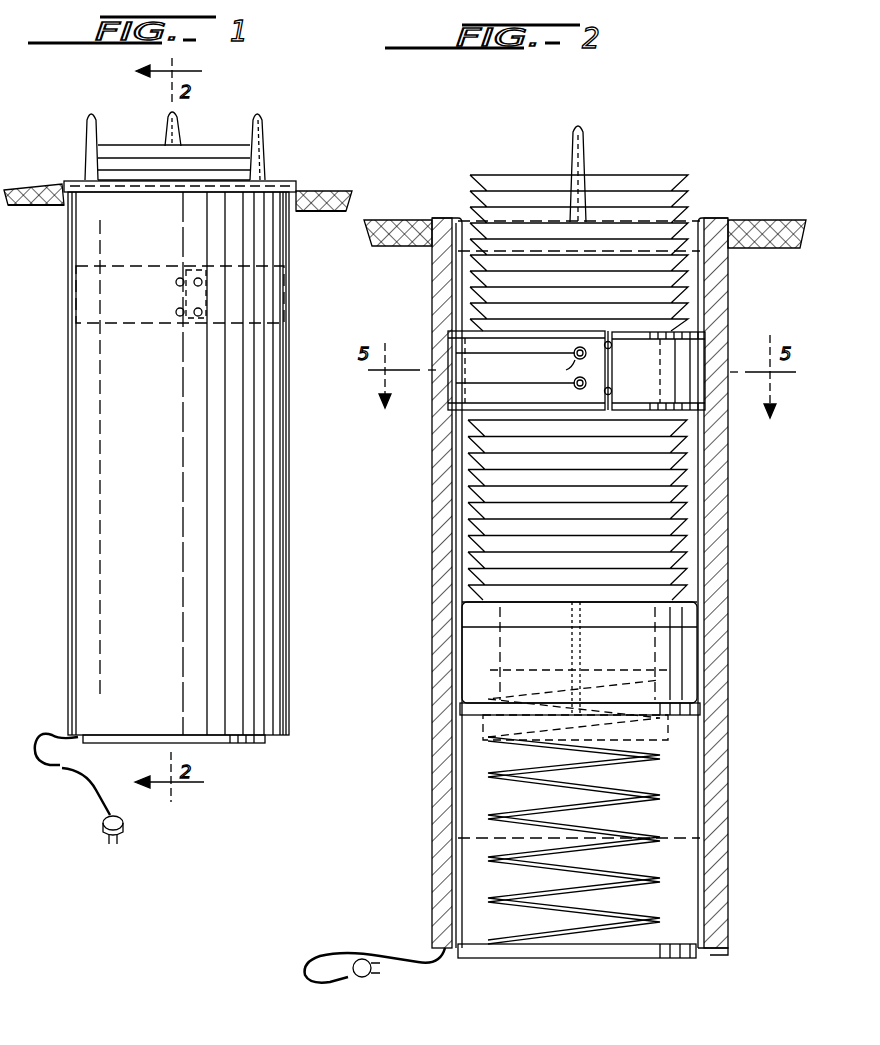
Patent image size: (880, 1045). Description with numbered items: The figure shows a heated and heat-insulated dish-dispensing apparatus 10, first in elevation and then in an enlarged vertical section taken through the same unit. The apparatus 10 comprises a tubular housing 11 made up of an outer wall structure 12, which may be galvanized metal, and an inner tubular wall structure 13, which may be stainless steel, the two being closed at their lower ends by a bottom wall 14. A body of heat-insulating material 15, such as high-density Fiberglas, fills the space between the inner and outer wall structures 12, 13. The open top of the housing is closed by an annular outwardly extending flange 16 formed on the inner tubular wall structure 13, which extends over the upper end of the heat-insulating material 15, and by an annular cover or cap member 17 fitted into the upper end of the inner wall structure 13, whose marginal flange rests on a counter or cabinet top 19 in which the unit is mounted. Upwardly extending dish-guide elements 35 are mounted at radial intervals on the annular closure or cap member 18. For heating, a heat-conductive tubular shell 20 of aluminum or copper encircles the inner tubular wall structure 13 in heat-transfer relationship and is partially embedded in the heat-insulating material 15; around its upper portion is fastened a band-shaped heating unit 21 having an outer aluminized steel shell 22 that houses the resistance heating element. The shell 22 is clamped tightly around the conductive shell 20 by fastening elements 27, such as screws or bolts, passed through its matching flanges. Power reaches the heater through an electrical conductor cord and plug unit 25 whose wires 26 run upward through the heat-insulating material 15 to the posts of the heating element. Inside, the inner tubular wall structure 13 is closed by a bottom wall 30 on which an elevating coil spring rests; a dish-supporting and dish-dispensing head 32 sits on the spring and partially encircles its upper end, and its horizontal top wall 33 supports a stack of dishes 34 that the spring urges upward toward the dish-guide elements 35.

In FIG. 1, the dish-dispensing apparatus 10 is at (294, 345).
In FIG. 2, the dish-dispensing apparatus 10 is at (738, 476).
In FIG. 1, the tubular housing 11 is at (278, 525).
In FIG. 2, the outer wall structure 12 is at (733, 586).
In FIG. 2, the inner tubular wall structure 13 is at (698, 887).
In FIG. 2, the bottom wall 14 is at (714, 957).
In FIG. 2, the heat-insulating material 15 is at (722, 792).
In FIG. 1, the annular outwardly extending flange 16 is at (280, 184).
In FIG. 2, the annular cover or cap member 17 is at (690, 226).
In FIG. 1, the annular closure or cap member 18 is at (302, 191).
In FIG. 2, the annular closure or cap member 18 is at (746, 220).
In FIG. 1, the cabinet top 19 is at (338, 193).
In FIG. 2, the cabinet top 19 is at (720, 692).
In FIG. 2, the heat-conductive tubular shell 20 is at (446, 795).
In FIG. 1, the heating unit 21 is at (290, 296).
In FIG. 2, the outer aluminized steel shell 22 is at (720, 332).
In FIG. 1, the electrical conductor cord and plug unit 25 is at (98, 818).
In FIG. 2, the electrical conductor cord and plug unit 25 is at (378, 966).
In FIG. 2, the wires 26 is at (432, 561).
In FIG. 2, the fastening elements 27 is at (612, 388).
In FIG. 1, the bottom wall 30 is at (258, 744).
In FIG. 2, the bottom wall 30 is at (656, 960).
In FIG. 2, the dish-supporting and dish-dispensing head 32 is at (704, 650).
In FIG. 2, the horizontal top wall 33 is at (700, 604).
In FIG. 1, the stack of dishes 34 is at (226, 168).
In FIG. 2, the stack of dishes 34 is at (706, 457).
In FIG. 1, the dish-guide elements 35 is at (261, 152).
In FIG. 2, the dish-guide elements 35 is at (581, 163).